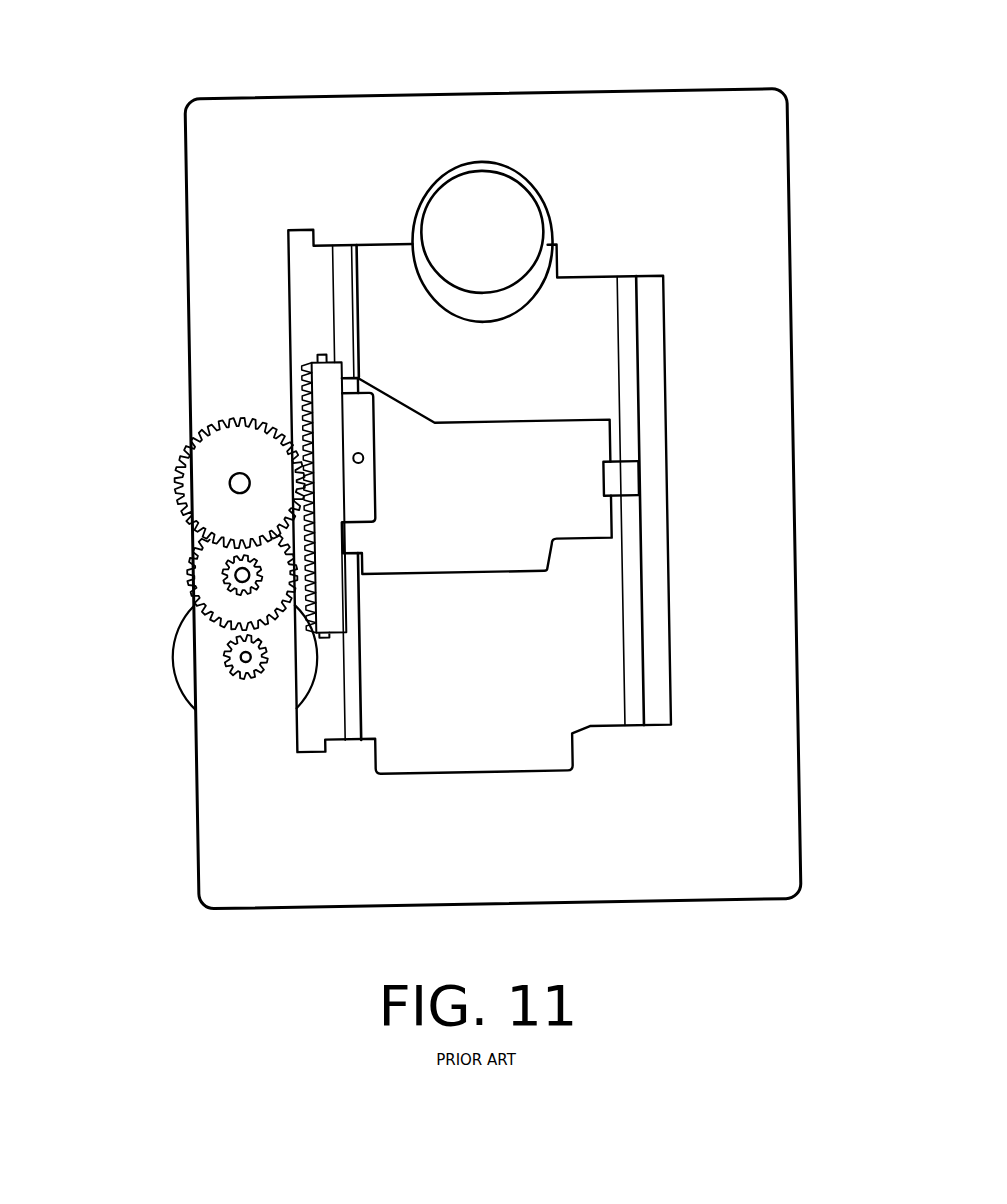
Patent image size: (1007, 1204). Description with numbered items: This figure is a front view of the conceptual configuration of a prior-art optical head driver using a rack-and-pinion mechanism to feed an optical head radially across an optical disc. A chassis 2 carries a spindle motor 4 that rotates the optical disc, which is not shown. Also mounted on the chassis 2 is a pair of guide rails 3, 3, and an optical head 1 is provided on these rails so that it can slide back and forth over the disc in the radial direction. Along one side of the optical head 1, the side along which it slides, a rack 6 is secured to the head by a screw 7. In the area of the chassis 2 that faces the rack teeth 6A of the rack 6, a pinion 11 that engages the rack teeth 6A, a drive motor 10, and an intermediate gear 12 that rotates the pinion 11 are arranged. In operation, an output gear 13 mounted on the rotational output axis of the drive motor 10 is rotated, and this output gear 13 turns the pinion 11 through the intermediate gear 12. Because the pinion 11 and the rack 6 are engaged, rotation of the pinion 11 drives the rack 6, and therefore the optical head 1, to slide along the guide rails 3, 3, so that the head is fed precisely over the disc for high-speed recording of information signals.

The optical head 1 is at (497, 557).
The chassis 2 is at (278, 127).
The guide rails 3 is at (345, 315).
The spindle motor 4 is at (477, 207).
The rack 6 is at (345, 420).
The rack teeth 6A is at (300, 410).
The screw 7 is at (372, 455).
The drive motor 10 is at (195, 690).
The pinion 11 is at (197, 482).
The intermediate gear 12 is at (192, 601).
The output gear 13 is at (228, 670).